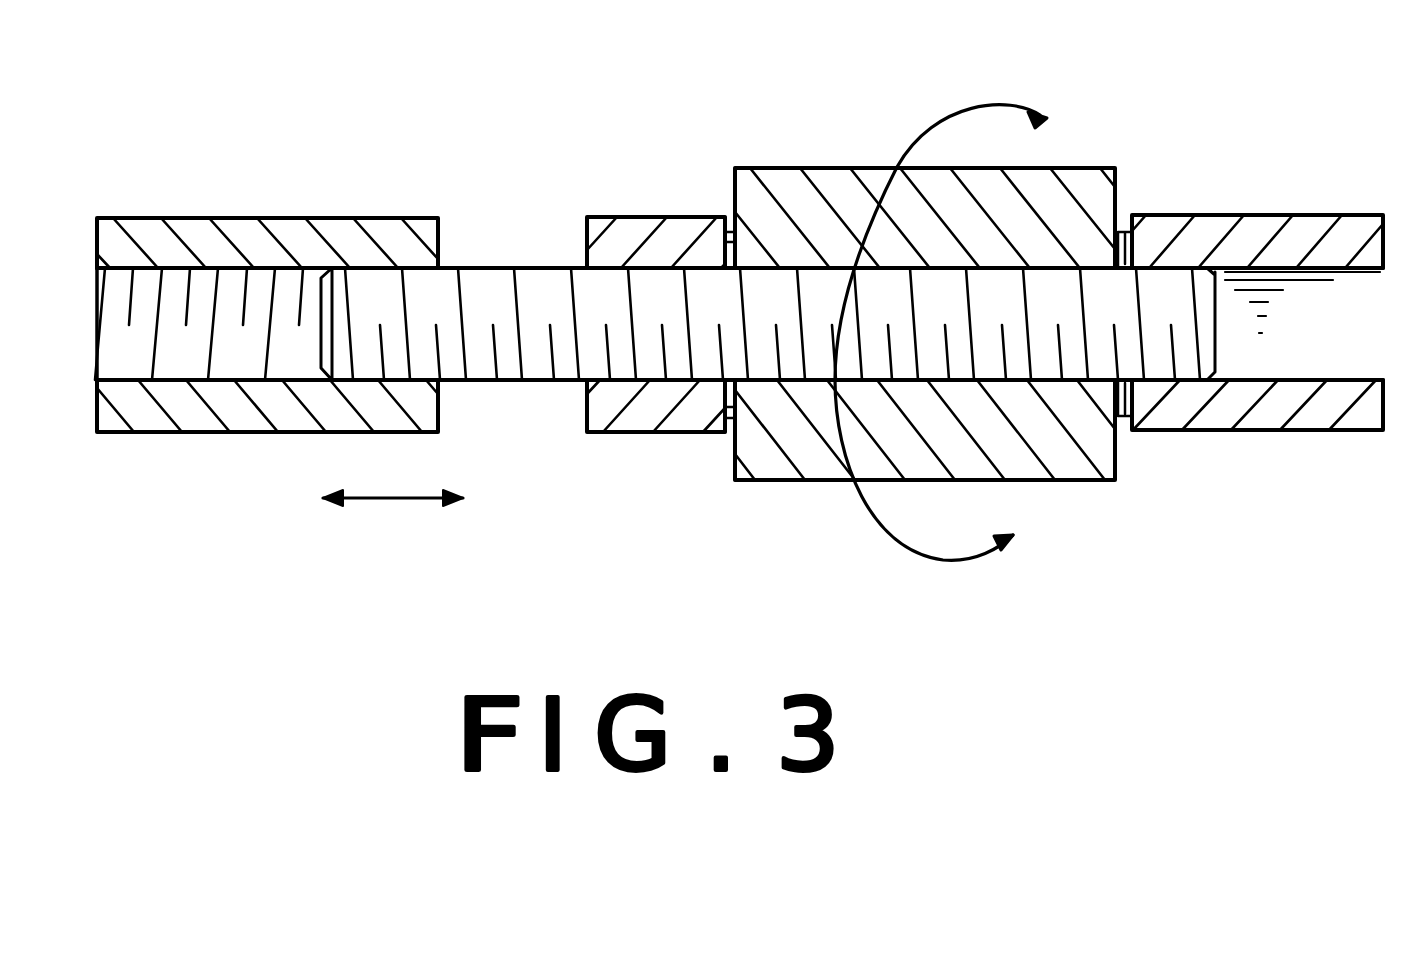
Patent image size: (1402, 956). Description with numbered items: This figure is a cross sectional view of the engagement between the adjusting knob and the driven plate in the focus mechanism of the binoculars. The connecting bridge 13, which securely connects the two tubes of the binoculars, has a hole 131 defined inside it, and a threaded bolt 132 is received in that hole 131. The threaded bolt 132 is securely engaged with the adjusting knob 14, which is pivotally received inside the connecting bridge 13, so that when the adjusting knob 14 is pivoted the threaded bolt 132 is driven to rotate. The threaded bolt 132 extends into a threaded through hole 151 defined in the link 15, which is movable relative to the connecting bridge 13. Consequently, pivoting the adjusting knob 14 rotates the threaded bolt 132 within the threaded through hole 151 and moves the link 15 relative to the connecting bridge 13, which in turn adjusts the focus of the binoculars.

The connecting bridge 13 is at (1220, 222).
The hole 131 is at (727, 255).
The threaded bolt 132 is at (603, 290).
The adjusting knob 14 is at (1088, 185).
The link 15 is at (243, 228).
The threaded through hole 151 is at (445, 290).